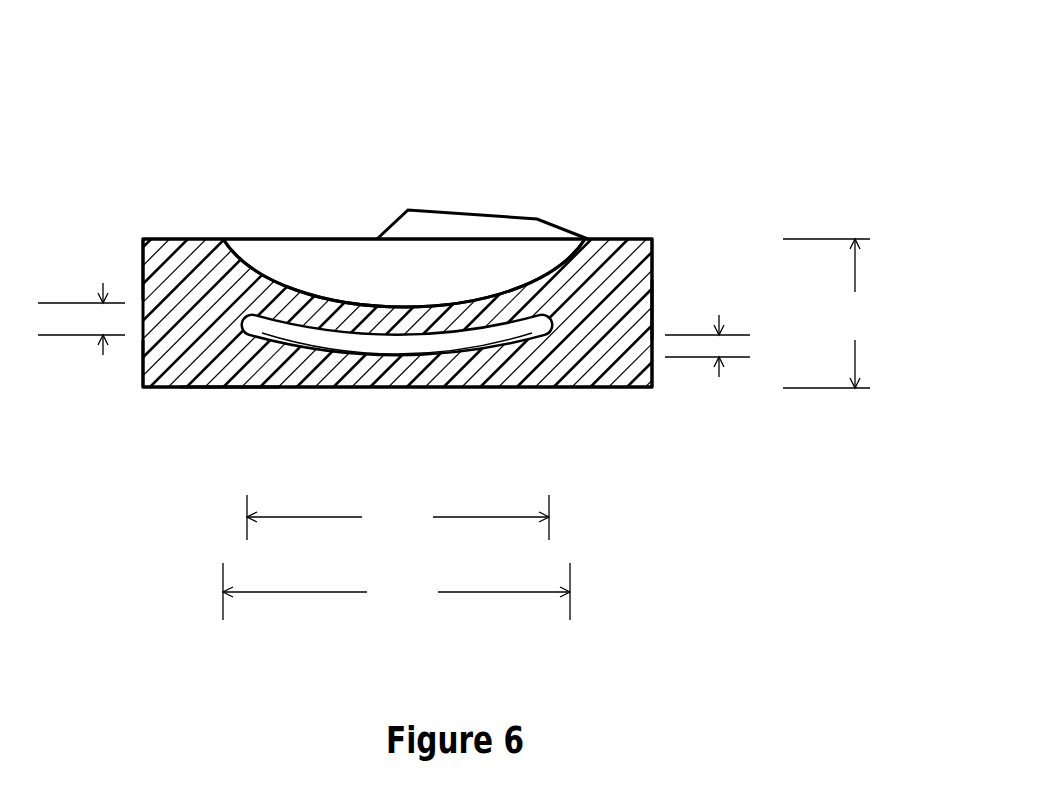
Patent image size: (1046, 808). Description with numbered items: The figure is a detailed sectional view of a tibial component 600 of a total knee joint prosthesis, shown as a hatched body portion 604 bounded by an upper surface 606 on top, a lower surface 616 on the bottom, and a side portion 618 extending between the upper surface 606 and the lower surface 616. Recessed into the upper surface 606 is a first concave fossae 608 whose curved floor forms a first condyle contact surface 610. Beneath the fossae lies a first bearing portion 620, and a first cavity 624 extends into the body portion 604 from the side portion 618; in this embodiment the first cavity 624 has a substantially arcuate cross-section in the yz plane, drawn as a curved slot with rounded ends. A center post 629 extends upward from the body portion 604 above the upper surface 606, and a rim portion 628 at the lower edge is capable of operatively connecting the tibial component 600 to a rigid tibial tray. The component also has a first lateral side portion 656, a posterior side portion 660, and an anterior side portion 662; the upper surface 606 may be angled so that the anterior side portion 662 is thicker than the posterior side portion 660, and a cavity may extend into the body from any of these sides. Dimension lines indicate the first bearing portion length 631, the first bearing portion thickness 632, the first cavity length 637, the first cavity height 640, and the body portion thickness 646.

The tibial component 600 is at (655, 94).
The body portion 604 is at (197, 280).
The upper surface 606 is at (636, 239).
The first concave fossae 608 is at (358, 258).
The first condyle contact surface 610 is at (283, 287).
The lower surface 616 is at (628, 388).
The side portion 618 is at (652, 292).
The first bearing portion 620 is at (312, 315).
The first cavity 624 is at (477, 342).
The rim portion 628 is at (143, 377).
The center post 629 is at (453, 220).
The first bearing portion length 631 is at (396, 591).
The first bearing portion thickness 632 is at (81, 319).
The first cavity length 637 is at (398, 517).
The first cavity height 640 is at (707, 353).
The body portion thickness 646 is at (829, 313).
The first lateral side portion 656 is at (222, 368).
The posterior side portion 660 is at (652, 310).
The anterior side portion 662 is at (143, 272).